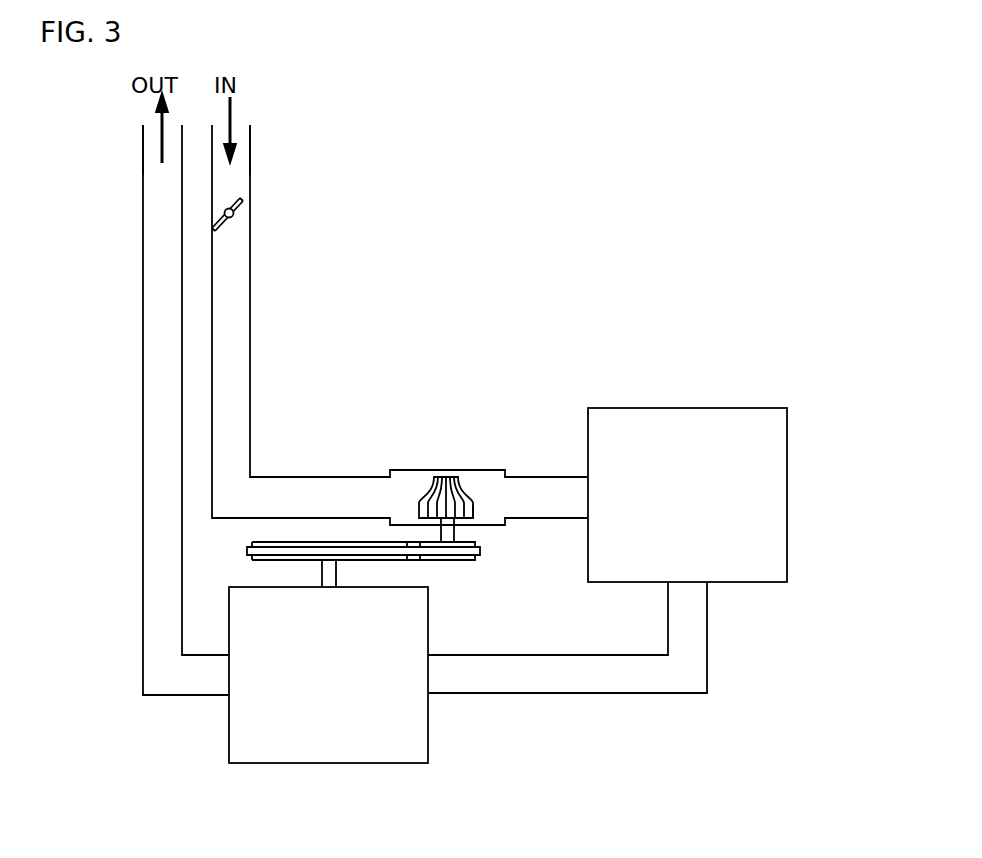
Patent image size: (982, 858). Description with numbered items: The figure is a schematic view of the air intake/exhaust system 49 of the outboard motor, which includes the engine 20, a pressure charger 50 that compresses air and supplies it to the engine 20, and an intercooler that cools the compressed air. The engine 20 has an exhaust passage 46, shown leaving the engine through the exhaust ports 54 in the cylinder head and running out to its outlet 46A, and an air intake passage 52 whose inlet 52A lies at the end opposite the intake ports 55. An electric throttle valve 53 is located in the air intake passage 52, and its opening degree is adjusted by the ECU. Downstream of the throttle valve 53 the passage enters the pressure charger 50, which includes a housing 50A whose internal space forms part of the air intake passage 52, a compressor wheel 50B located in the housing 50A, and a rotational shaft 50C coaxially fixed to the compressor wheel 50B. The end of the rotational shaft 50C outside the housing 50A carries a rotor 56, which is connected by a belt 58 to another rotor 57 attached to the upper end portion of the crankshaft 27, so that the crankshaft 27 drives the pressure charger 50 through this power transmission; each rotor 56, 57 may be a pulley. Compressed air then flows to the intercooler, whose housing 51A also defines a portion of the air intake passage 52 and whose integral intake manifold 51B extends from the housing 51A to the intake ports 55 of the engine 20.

The engine 20 is at (329, 763).
The crankshaft 27 is at (322, 572).
The exhaust passage 46 is at (143, 420).
The exhaust outlet 46A is at (143, 130).
The air intake/exhaust system 49 is at (757, 109).
The pressure charger 50 is at (492, 470).
The housing 50A is at (447, 477).
The compressor wheel 50B is at (473, 511).
The rotational shaft 50C is at (455, 532).
The housing 51A is at (787, 493).
The intake manifold 51B is at (640, 693).
The air intake passage 52 is at (250, 265).
The inlet 52A is at (238, 128).
The electric throttle valve 53 is at (242, 208).
The exhaust ports 54 is at (222, 677).
The intake ports 55 is at (435, 677).
The rotor 56 is at (460, 560).
The rotor 57 is at (362, 542).
The belt 58 is at (413, 547).